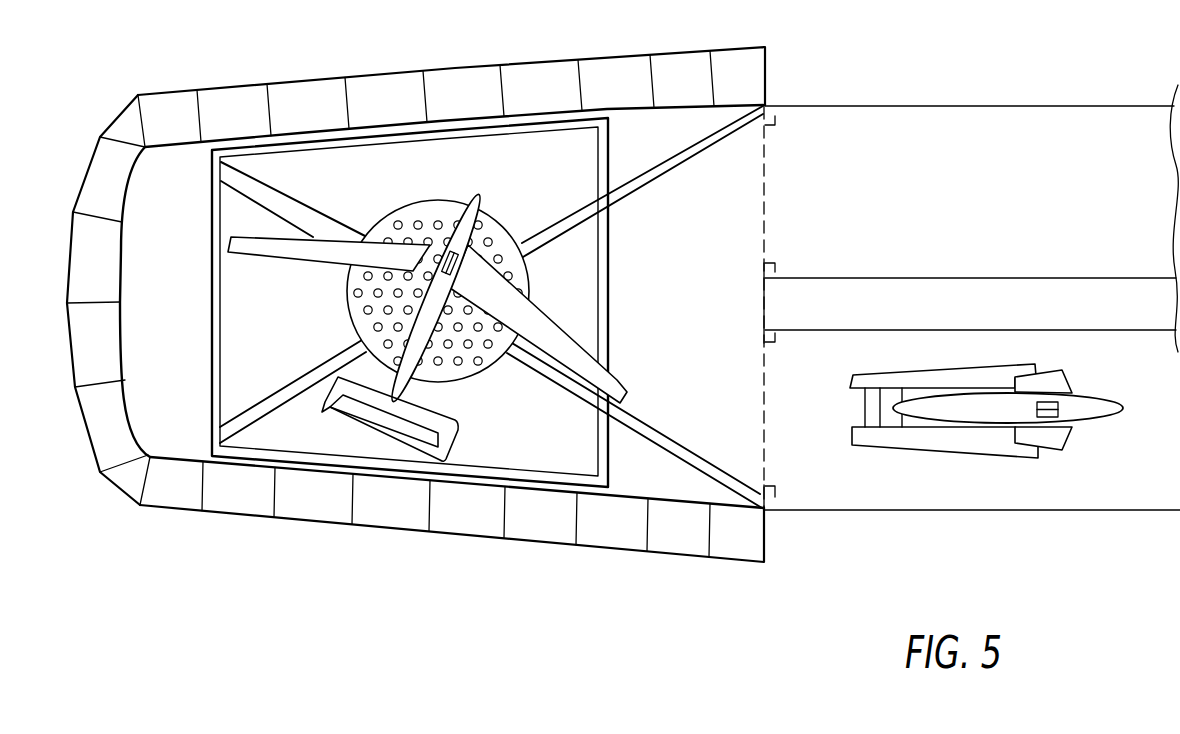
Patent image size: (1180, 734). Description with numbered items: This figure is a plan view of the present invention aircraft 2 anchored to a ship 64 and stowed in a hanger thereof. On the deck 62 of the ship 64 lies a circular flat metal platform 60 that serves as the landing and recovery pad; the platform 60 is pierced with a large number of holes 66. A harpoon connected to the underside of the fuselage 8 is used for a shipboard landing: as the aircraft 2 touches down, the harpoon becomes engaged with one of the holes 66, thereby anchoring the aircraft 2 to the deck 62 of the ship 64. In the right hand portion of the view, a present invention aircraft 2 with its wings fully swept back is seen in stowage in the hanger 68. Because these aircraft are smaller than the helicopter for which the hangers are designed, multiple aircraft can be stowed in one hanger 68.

The aircraft 2 is at (947, 464).
The fuselage 8 is at (417, 385).
The platform 60 is at (497, 222).
The deck 62 is at (368, 74).
The ship 64 is at (1068, 519).
The holes 66 is at (407, 211).
The hanger 68 is at (816, 372).